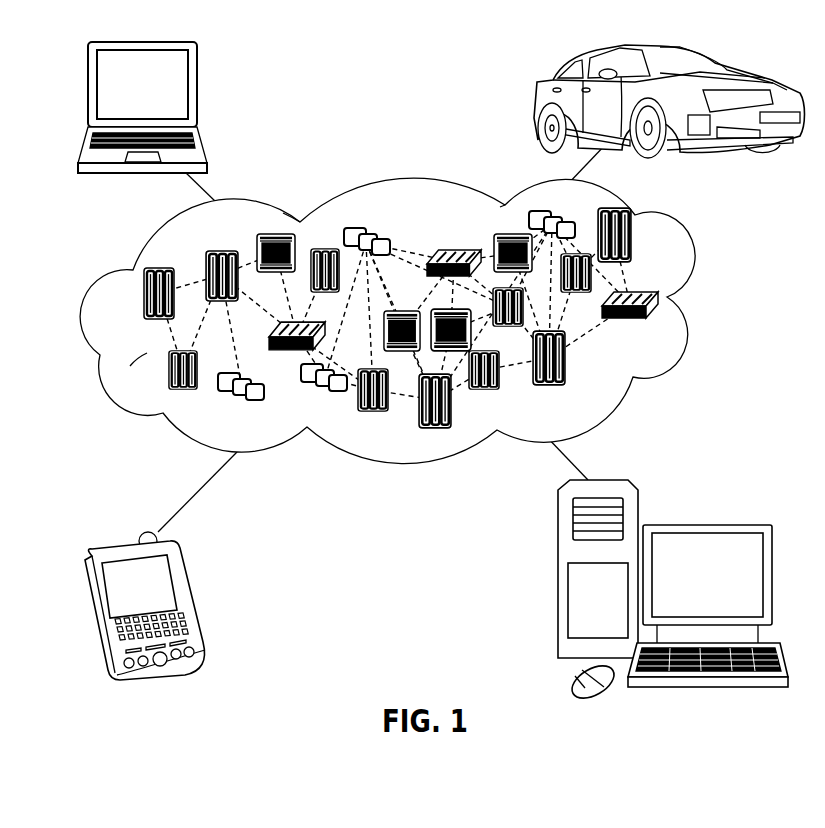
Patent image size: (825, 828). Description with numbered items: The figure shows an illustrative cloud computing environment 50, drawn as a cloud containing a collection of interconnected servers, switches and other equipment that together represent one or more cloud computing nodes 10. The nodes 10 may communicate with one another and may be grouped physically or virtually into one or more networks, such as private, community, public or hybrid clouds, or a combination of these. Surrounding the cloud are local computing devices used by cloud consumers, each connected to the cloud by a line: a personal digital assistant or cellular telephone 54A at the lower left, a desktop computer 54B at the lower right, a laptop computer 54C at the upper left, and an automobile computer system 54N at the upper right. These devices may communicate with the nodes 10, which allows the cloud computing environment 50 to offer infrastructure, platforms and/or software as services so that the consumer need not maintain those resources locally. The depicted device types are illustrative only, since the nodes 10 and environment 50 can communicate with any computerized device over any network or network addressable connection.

The cloud computing nodes 10 is at (664, 327).
The cloud computing environment 50 is at (708, 302).
The personal digital assistant (PDA) or cellular telephone 54A is at (188, 598).
The desktop computer 54B is at (707, 524).
The laptop computer 54C is at (198, 92).
The automobile computer system 54N is at (536, 105).